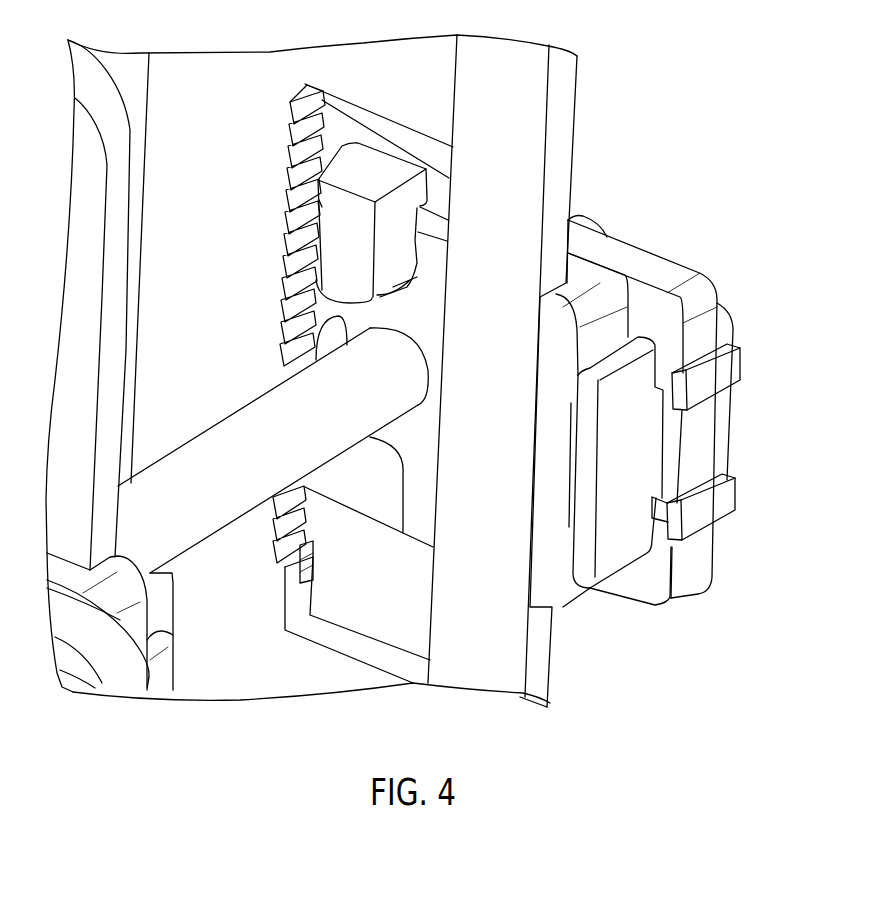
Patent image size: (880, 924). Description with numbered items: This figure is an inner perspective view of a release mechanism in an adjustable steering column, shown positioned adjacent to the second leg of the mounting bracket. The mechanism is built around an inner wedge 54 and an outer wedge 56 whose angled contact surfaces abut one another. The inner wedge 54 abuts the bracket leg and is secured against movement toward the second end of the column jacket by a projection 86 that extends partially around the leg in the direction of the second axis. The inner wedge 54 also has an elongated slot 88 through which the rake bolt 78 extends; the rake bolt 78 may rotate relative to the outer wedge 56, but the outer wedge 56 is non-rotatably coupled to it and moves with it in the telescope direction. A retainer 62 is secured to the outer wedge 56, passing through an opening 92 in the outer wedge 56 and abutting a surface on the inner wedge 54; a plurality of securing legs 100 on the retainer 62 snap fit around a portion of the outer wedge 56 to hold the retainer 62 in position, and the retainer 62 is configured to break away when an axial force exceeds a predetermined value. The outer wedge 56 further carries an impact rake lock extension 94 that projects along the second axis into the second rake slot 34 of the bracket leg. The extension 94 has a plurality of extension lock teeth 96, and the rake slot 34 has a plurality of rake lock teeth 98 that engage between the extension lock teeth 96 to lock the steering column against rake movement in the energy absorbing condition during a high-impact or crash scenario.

The second rake slot 34 is at (365, 650).
The inner wedge 54 is at (557, 593).
The outer wedge 56 is at (650, 260).
The retainer 62 is at (723, 417).
The rake bolt 78 is at (177, 508).
The projection 86 is at (557, 560).
The elongated slot 88 is at (327, 343).
The opening 92 is at (657, 457).
The impact rake lock extension 94 is at (353, 153).
The extension lock teeth 96 is at (320, 206).
The rake lock teeth 98 is at (296, 223).
The securing legs 100 is at (730, 367).